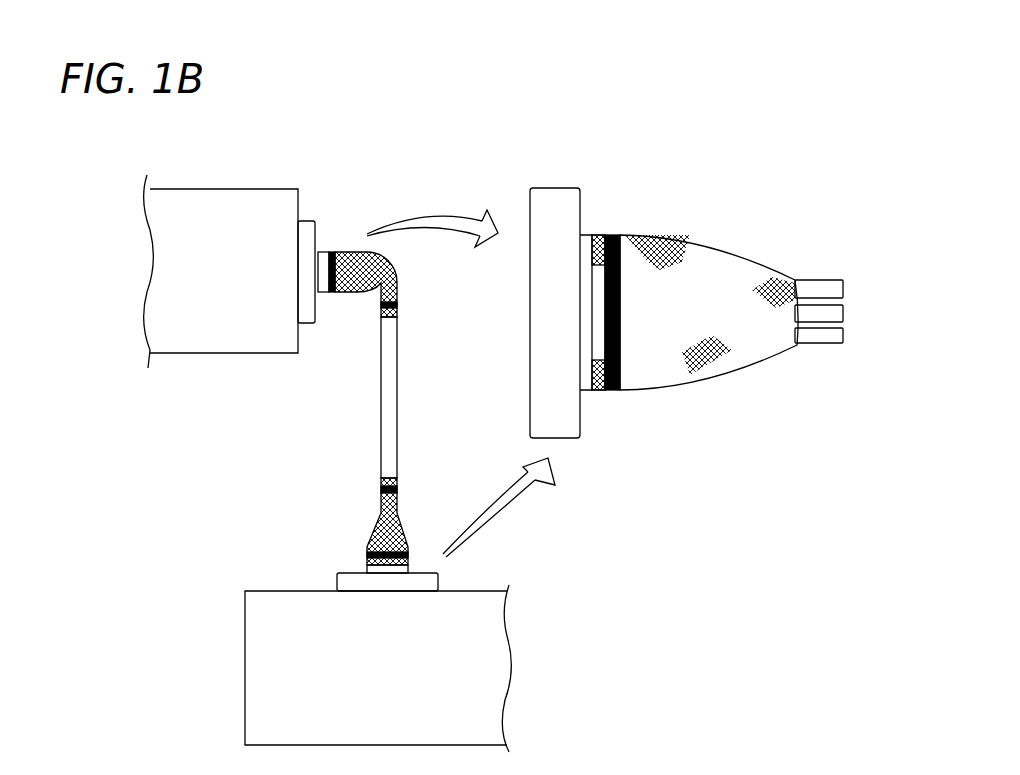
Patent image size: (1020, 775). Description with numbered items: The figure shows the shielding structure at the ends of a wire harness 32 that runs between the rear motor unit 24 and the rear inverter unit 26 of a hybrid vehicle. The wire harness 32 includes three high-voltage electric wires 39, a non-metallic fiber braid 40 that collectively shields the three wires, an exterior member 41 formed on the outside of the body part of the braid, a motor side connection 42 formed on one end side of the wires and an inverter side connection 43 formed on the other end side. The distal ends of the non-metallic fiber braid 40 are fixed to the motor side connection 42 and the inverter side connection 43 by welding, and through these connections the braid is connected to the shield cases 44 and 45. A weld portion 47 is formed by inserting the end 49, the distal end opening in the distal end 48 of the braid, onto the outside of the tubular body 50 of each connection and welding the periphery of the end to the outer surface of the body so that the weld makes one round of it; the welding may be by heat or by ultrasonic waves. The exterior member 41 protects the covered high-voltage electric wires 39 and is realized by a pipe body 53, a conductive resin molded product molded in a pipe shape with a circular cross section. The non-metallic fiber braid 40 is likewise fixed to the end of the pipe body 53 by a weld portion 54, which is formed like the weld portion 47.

The rear motor unit 24 is at (244, 648).
The rear inverter unit 26 is at (197, 187).
The wire harness 32 is at (413, 390).
The high-voltage electric wires 39 is at (832, 290).
The non-metallic fiber braid 40 is at (340, 294).
The exterior member 41 is at (381, 437).
The motor side connection 42 is at (440, 583).
The inverter side connection 43 is at (308, 231).
The shield case 44 is at (287, 614).
The shield case 45 is at (262, 213).
The weld portion 47 is at (332, 252).
The distal end 48 is at (652, 382).
The end 49 is at (598, 307).
The body 50 is at (583, 340).
The pipe body 53 is at (390, 442).
The weld portion 54 is at (397, 305).